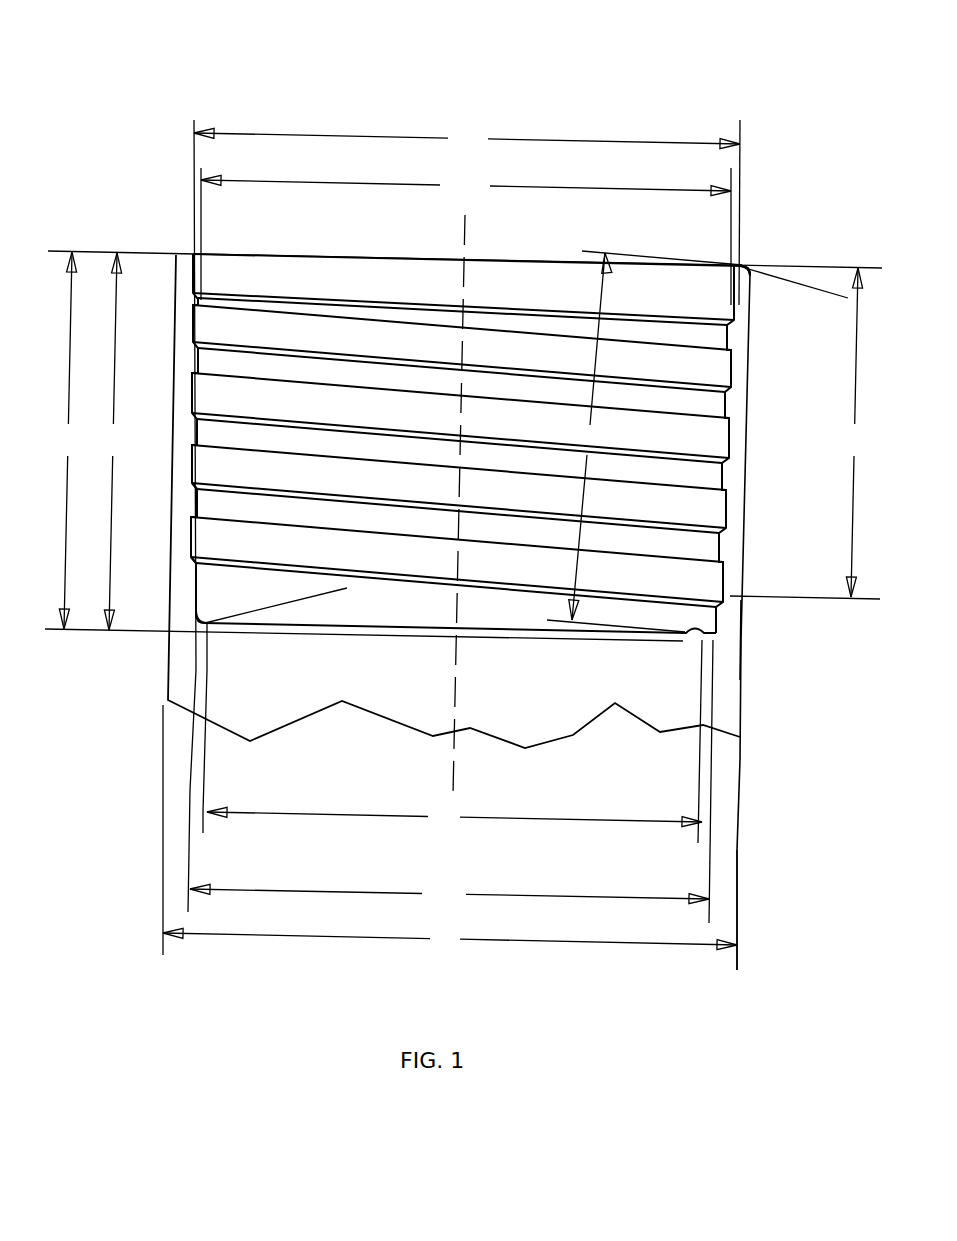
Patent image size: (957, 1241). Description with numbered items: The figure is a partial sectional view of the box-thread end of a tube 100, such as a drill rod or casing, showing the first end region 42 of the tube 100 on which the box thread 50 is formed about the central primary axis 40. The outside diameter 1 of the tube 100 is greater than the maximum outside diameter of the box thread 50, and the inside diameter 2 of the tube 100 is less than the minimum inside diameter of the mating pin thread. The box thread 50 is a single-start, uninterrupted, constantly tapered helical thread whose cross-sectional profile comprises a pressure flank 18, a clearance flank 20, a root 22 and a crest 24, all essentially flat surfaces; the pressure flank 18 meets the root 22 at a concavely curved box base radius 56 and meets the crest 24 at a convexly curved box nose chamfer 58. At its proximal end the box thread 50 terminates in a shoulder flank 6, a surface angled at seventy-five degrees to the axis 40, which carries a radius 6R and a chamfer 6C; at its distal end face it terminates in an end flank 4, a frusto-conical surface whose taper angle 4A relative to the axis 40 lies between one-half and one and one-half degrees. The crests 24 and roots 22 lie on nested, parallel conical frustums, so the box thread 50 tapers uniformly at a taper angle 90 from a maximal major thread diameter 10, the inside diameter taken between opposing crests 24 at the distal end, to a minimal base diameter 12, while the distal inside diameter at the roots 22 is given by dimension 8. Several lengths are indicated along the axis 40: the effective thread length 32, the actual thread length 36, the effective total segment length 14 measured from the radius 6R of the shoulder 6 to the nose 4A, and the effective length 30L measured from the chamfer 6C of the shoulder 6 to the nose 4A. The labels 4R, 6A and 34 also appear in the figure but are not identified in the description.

The outside diameter 1 is at (450, 830).
The inside diameter 2 is at (452, 733).
The end flank 4 is at (738, 287).
The taper angle of end flank 4A is at (800, 333).
The chamfer corner radius 4R is at (748, 272).
The shoulder flank 6 is at (735, 622).
The trailing end angle 6A is at (297, 548).
The chamfer of shoulder 6C is at (687, 640).
The radius of shoulder 6R is at (203, 611).
The box thread distal inside diameter at root 8 is at (464, 516).
The major thread diameter 10 is at (466, 236).
The base diameter 12 is at (451, 781).
The effective total segment length 14 is at (69, 440).
The pressure flank 18 is at (723, 493).
The clearance flank 20 is at (725, 452).
The root 22 is at (193, 463).
The crest 24 is at (198, 502).
The effective length 30L is at (112, 441).
The effective thread length 32 is at (852, 432).
The leading end face 34 is at (304, 254).
The actual thread length 36 is at (590, 436).
The central axis 40 is at (455, 657).
The first end region 42 is at (303, 68).
The box thread 50 is at (746, 487).
The box base radius 56 is at (213, 545).
The box nose chamfer 58 is at (198, 505).
The taper angle 90 is at (709, 887).
The tube 100 is at (720, 712).